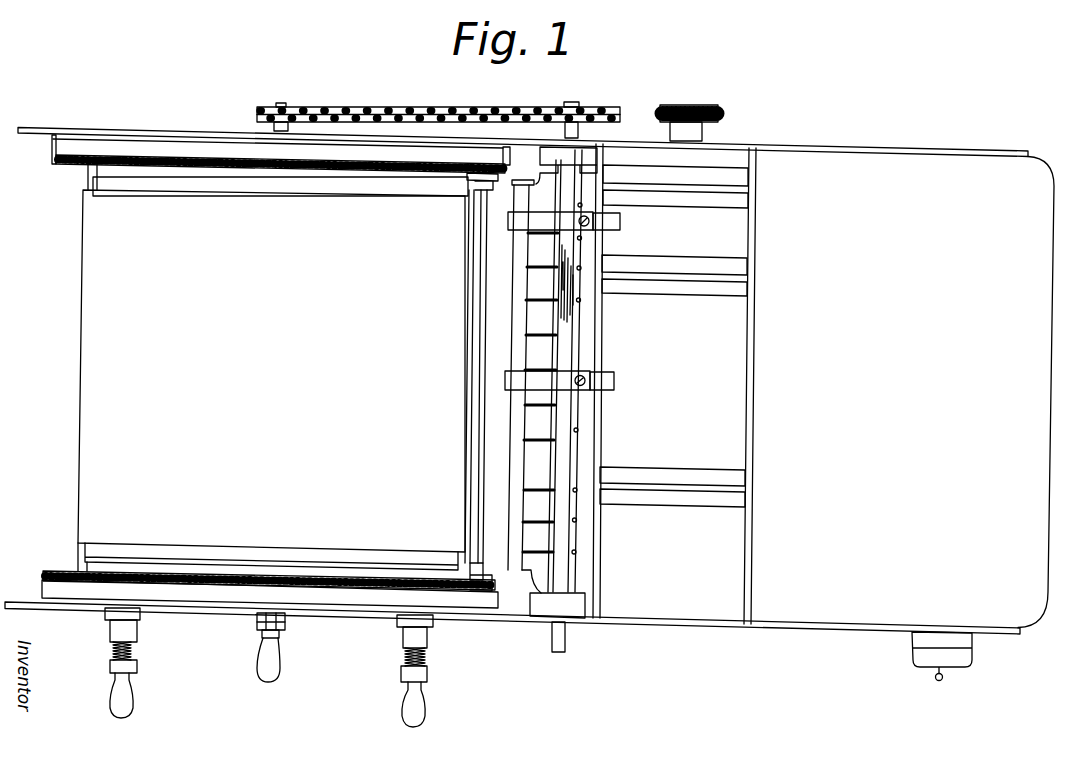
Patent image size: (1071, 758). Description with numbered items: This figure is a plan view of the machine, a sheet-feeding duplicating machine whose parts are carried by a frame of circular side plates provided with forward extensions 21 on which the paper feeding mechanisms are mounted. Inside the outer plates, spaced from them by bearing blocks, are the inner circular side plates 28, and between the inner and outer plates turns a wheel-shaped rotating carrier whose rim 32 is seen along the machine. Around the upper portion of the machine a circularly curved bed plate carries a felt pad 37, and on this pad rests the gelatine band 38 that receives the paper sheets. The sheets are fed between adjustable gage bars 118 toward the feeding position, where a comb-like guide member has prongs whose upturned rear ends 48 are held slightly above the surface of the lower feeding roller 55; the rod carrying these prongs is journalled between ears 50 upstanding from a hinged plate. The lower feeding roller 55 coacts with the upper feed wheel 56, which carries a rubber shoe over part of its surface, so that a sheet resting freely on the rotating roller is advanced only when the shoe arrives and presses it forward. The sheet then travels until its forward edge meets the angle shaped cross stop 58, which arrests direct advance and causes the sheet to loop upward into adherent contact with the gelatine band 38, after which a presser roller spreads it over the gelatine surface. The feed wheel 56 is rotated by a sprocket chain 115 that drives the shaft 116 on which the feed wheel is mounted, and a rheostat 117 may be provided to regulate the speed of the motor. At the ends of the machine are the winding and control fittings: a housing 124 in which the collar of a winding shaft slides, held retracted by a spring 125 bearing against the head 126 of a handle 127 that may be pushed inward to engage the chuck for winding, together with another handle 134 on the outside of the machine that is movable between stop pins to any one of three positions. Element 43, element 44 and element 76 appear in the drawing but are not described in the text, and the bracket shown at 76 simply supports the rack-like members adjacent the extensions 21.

The forward extensions 21 is at (770, 148).
The inner circular side plates 28 is at (79, 175).
The rim 32 is at (304, 179).
The felt pad 37 is at (107, 550).
The gelatine band 38 is at (90, 383).
The rounded end housing 43 is at (973, 419).
The frame column 44 is at (728, 344).
The upturned rear ends of prongs 48 is at (578, 548).
The ears 50 is at (517, 504).
The lower feeding roller 55 is at (592, 348).
The upper feed wheel 56 is at (620, 222).
The angle shaped cross stop 58 is at (478, 468).
The rack bracket 76 is at (45, 158).
The sprocket chain 115 is at (410, 100).
The shaft 116 is at (565, 346).
The rheostat 117 is at (706, 132).
The adjustable gage bars 118 is at (736, 190).
The housing 124 is at (428, 632).
The spring 125 is at (132, 651).
The head 126 is at (413, 673).
The handle 127 is at (112, 651).
The handle 134 is at (287, 629).